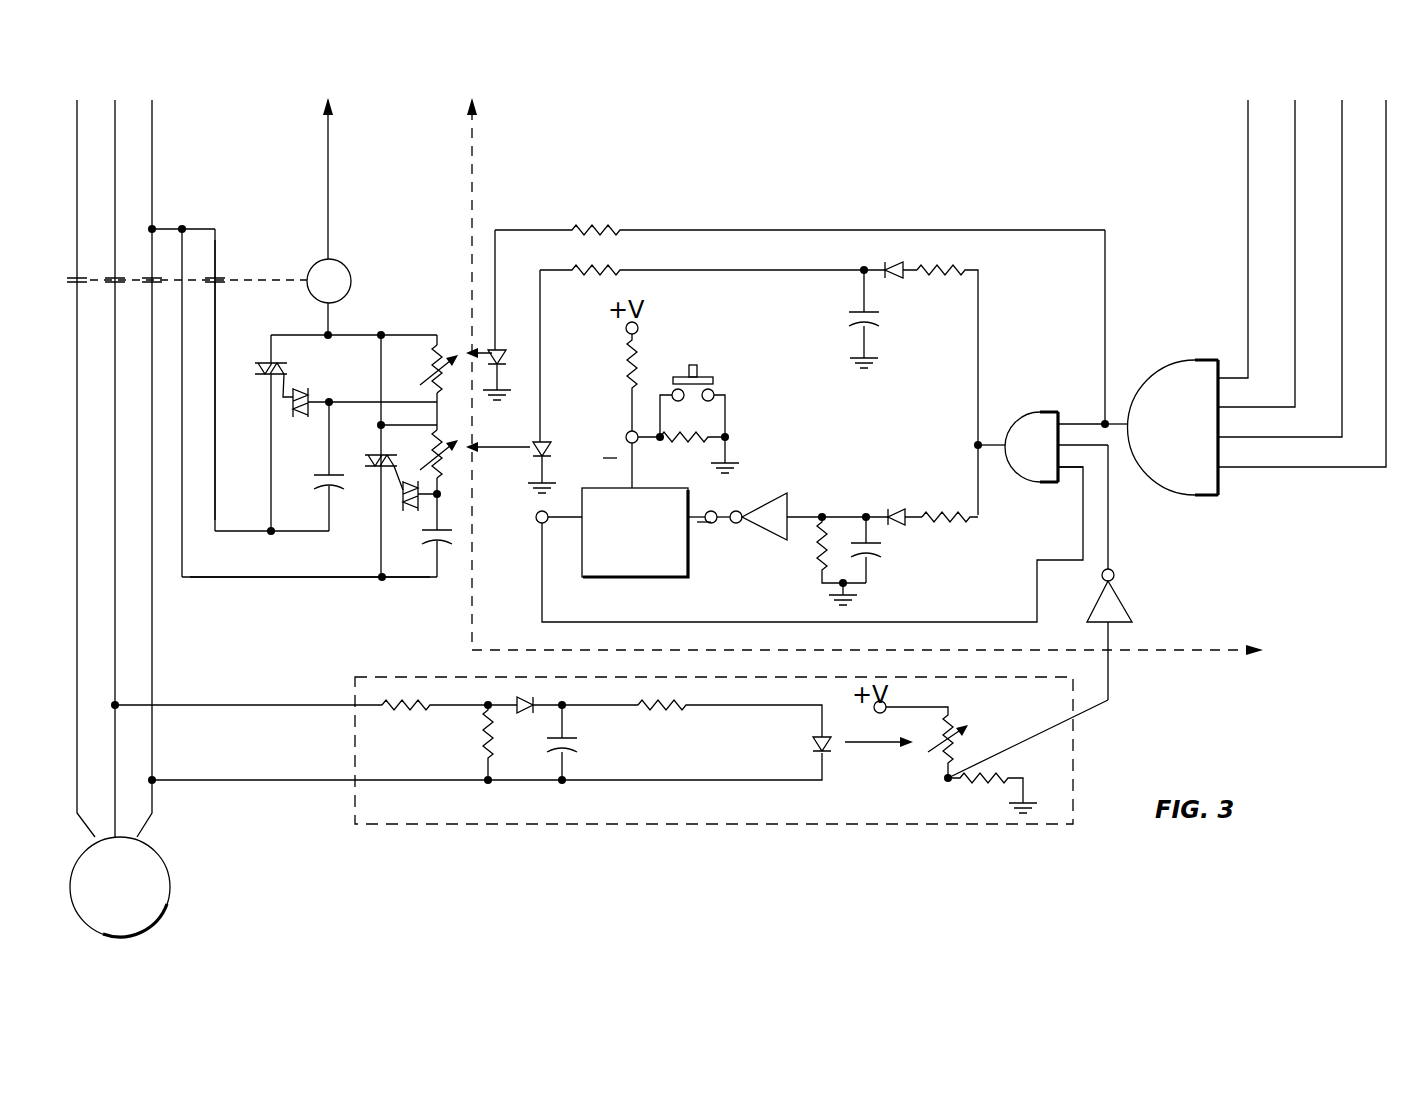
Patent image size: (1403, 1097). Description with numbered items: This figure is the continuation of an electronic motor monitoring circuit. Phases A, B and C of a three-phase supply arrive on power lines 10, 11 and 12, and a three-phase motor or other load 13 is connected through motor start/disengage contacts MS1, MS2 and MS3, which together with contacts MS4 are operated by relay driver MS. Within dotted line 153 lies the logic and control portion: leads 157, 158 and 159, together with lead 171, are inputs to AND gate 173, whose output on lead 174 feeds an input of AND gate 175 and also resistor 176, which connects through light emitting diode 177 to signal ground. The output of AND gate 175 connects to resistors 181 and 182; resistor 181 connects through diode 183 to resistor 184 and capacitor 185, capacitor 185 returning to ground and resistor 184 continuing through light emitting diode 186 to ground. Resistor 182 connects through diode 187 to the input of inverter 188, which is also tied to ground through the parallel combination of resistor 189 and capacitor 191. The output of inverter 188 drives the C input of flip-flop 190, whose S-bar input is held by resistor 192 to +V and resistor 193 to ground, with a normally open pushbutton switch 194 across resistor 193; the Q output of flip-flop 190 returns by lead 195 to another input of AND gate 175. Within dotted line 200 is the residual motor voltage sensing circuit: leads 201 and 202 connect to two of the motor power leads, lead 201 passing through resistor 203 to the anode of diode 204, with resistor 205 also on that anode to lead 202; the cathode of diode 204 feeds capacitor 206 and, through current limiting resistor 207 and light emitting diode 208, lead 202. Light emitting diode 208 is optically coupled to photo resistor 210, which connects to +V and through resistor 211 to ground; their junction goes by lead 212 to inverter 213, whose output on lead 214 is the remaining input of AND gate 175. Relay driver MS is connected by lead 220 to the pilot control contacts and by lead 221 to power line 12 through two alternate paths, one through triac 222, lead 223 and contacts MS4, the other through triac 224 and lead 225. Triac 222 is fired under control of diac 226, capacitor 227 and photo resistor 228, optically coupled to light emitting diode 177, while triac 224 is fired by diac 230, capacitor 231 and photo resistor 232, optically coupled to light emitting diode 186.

The power line 10 is at (77, 158).
The power line 11 is at (115, 140).
The power line 12 is at (152, 118).
The three-phase motor 13 is at (168, 880).
The dotted line 153 is at (472, 130).
The lead 157 is at (1386, 165).
The lead 158 is at (1342, 147).
The lead 159 is at (1295, 138).
The lead 171 is at (1248, 143).
The AND gate 173 is at (1200, 360).
The lead 174 is at (1105, 295).
The AND gate 175 is at (1020, 412).
The resistor 176 is at (600, 230).
The light emitting diode 177 is at (505, 350).
The resistor 181 is at (940, 265).
The resistor 182 is at (945, 505).
The diode 183 is at (895, 265).
The resistor 184 is at (600, 270).
The capacitor 185 is at (858, 313).
The light emitting diode 186 is at (550, 447).
The diode 187 is at (897, 505).
The inverter 188 is at (760, 490).
The resistor 189 is at (822, 548).
The flip-flop 190 is at (620, 577).
The capacitor 191 is at (875, 553).
The resistor 192 is at (630, 365).
The resistor 193 is at (685, 442).
The pushbutton switch 194 is at (700, 365).
The lead 195 is at (770, 622).
The dotted line 200 is at (658, 824).
The lead 201 is at (270, 705).
The lead 202 is at (275, 780).
The resistor 203 is at (412, 705).
The diode 204 is at (525, 697).
The resistor 205 is at (488, 735).
The capacitor 206 is at (572, 745).
The current limiting resistor 207 is at (665, 705).
The light emitting diode 208 is at (815, 745).
The photo resistor 210 is at (955, 720).
The resistor 211 is at (982, 793).
The lead 212 is at (1100, 708).
The inverter 213 is at (1125, 600).
The lead 214 is at (1108, 530).
The lead 220 is at (328, 160).
The lead 221 is at (350, 335).
The triac 222 is at (262, 363).
The lead 223 is at (215, 390).
The triac 224 is at (380, 455).
The lead 225 is at (312, 577).
The diac 226 is at (342, 380).
The capacitor 227 is at (329, 475).
The photo resistor 228 is at (440, 360).
The diac 230 is at (403, 500).
The capacitor 231 is at (437, 545).
The photo resistor 232 is at (442, 452).
The relay driver MS is at (329, 297).
The motor start/disengage contact MS1 is at (77, 278).
The motor start/disengage contact MS2 is at (115, 285).
The motor start/disengage contact MS3 is at (152, 285).
The contact MS4 is at (218, 275).